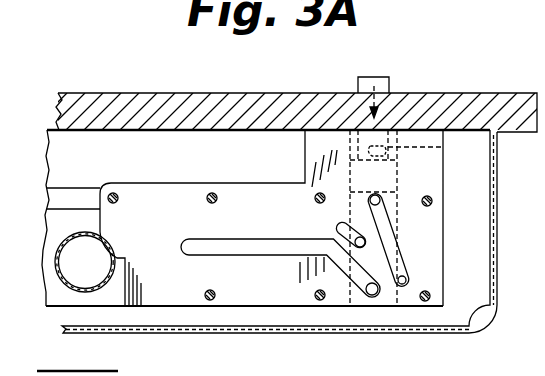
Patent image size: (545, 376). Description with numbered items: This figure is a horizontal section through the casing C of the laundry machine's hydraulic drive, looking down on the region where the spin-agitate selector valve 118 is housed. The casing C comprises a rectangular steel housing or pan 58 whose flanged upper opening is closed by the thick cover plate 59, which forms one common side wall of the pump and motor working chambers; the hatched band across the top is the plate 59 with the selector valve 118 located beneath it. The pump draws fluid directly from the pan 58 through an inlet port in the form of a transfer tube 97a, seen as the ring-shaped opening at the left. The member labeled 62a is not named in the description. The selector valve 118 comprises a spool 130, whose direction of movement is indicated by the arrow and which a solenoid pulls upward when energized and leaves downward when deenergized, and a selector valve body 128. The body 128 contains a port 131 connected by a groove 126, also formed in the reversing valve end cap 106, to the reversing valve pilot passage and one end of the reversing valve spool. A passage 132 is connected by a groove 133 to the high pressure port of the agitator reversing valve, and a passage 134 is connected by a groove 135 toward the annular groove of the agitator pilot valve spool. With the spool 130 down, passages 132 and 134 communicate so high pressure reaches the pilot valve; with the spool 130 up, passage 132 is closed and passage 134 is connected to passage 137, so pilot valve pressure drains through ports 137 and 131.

The cover plate 59 is at (57, 108).
The casing C is at (112, 85).
The spin-agitate selector valve 118 is at (389, 79).
The spool 130 is at (372, 82).
The housing body 62a is at (47, 289).
The reversing valve end cap 106 is at (162, 183).
The transfer tube 97a is at (107, 240).
The groove 126 is at (227, 241).
The passage 137 is at (443, 147).
The selector valve body 128 is at (443, 203).
The passage 132 is at (382, 244).
The passage 134 is at (380, 197).
The groove 133 is at (340, 229).
The groove 135 is at (405, 280).
The port 131 is at (373, 295).
The pan 58 is at (460, 337).